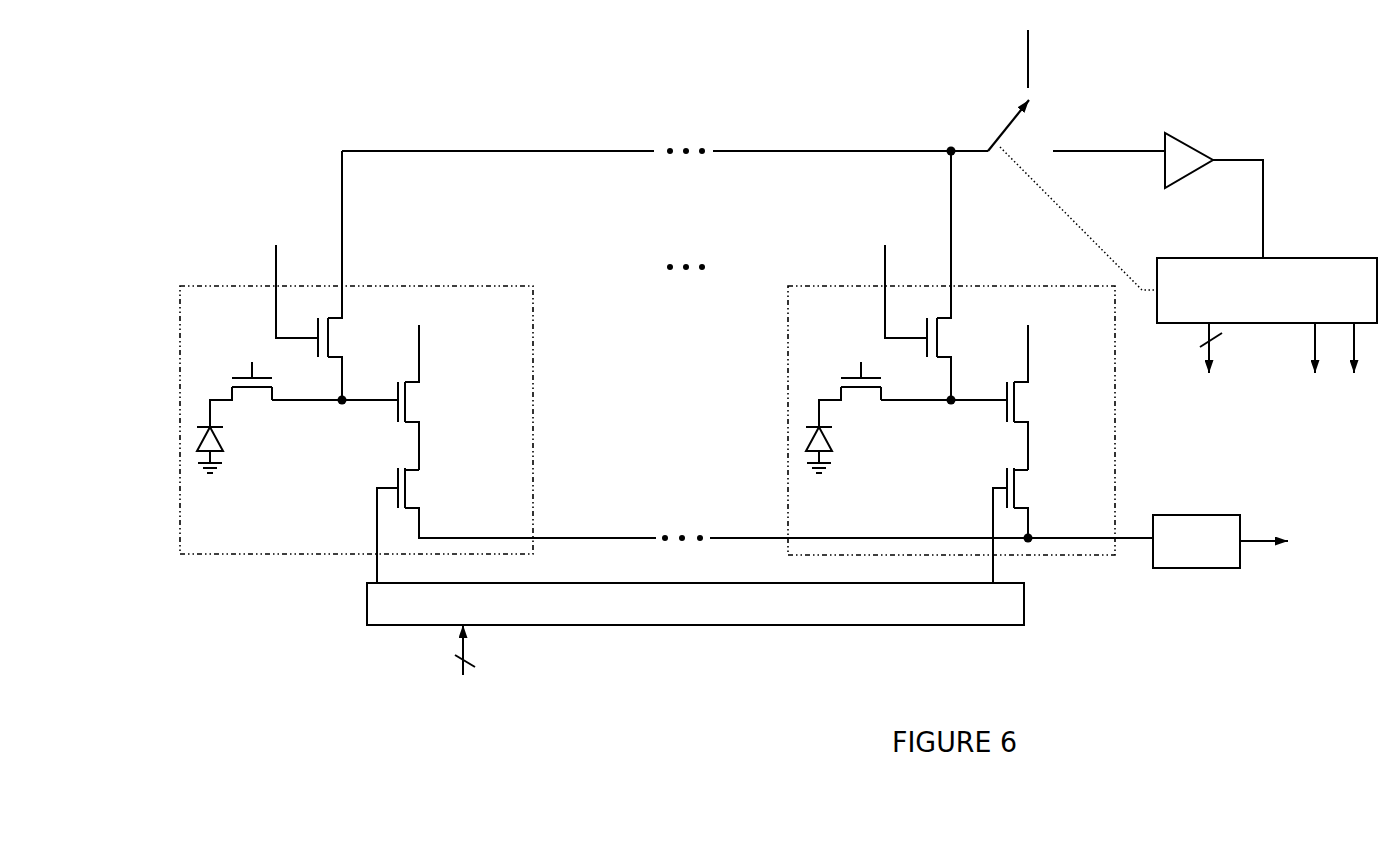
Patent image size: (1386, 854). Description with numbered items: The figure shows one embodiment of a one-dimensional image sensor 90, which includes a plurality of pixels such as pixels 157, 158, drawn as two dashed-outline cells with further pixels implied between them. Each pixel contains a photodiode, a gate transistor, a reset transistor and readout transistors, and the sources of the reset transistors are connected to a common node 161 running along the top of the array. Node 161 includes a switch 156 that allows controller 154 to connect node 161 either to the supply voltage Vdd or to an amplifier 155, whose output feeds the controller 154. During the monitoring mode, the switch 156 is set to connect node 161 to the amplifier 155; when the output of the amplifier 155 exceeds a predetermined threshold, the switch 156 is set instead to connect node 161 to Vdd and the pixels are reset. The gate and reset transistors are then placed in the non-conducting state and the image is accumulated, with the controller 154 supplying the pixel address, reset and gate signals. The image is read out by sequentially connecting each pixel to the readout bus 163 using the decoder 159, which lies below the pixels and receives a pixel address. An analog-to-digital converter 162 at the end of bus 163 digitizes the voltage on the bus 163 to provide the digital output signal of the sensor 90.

The image sensor 90 is at (193, 125).
The node 161 is at (523, 151).
The switch 156 is at (988, 151).
The amplifier 155 is at (1182, 145).
The controller 154 is at (1353, 263).
The pixel 157 is at (497, 286).
The pixel 158 is at (818, 286).
The readout bus 163 is at (598, 533).
The analog-to-digital converter 162 is at (1200, 568).
The decoder 159 is at (685, 625).